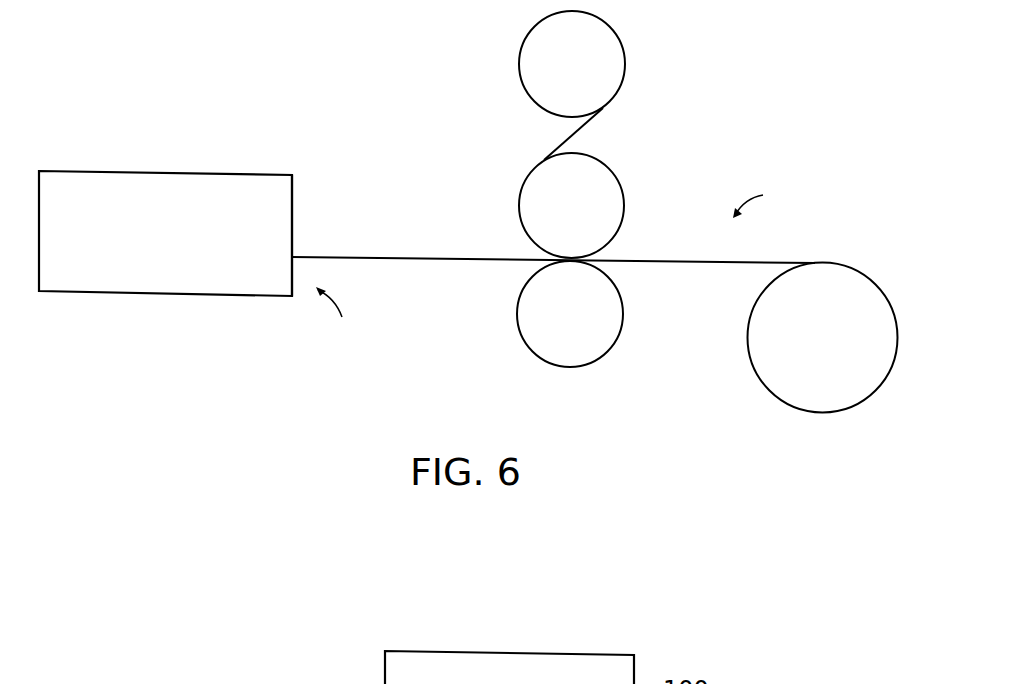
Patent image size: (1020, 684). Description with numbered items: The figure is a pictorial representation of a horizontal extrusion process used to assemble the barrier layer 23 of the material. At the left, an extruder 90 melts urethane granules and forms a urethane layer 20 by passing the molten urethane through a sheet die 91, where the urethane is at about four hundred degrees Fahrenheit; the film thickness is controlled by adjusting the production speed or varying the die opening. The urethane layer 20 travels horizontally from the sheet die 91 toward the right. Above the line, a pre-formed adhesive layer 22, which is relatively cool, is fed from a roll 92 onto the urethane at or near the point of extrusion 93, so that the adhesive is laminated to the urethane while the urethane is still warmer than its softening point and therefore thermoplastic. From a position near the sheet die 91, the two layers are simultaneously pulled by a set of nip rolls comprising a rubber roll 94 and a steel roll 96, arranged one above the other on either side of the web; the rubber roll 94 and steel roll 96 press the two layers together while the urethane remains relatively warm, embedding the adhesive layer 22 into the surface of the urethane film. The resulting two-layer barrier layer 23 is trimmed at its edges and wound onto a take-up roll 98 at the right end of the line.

The extruder 90 is at (147, 297).
The sheet die 91 is at (292, 192).
The point of extrusion 93 is at (334, 318).
The urethane layer 20 is at (420, 260).
The pre-formed adhesive layer 22 is at (582, 128).
The roll 92 is at (626, 60).
The rubber roll 94 is at (625, 196).
The steel roll 96 is at (590, 365).
The take-up roll 98 is at (877, 283).
The barrier layer 23 is at (764, 202).